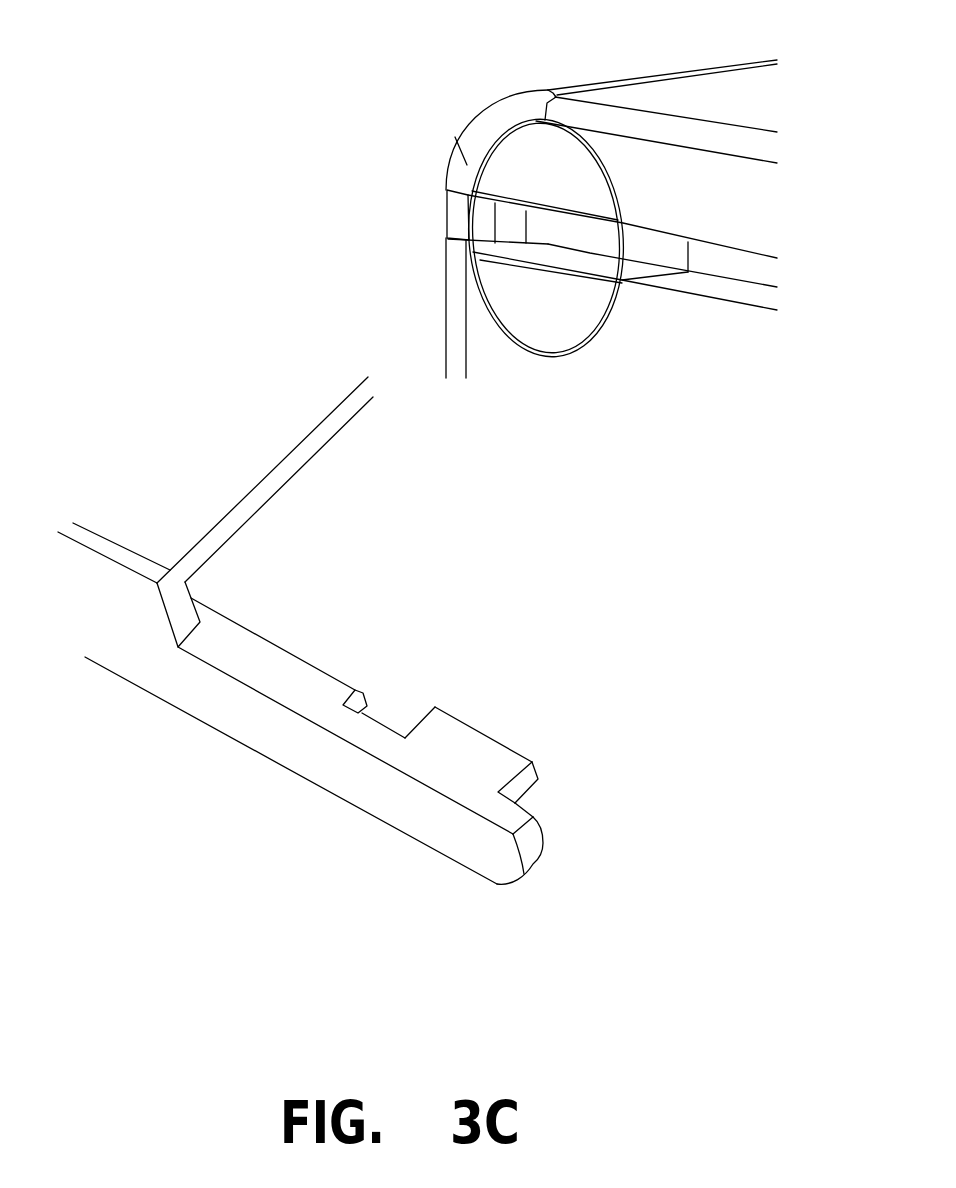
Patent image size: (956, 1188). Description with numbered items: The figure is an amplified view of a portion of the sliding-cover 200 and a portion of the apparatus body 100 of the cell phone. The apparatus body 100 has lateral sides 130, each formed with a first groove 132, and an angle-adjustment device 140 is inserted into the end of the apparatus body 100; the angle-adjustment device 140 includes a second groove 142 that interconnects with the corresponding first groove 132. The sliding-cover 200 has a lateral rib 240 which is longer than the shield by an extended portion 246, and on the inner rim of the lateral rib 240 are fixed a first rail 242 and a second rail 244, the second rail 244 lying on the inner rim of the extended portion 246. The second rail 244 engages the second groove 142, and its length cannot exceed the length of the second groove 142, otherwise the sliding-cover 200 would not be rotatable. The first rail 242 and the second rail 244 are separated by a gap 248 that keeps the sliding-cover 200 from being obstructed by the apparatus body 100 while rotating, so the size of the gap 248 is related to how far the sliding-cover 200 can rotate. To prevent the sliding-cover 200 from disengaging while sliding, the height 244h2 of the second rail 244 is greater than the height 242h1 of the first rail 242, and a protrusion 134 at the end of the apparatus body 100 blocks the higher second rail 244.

The apparatus body 100 is at (723, 122).
The lateral side 130 is at (732, 203).
The first groove 132 is at (760, 267).
The protrusion 134 is at (448, 220).
The angle-adjustment device 140 is at (528, 142).
The second groove 142 is at (650, 245).
The sliding-cover 200 is at (140, 690).
The lateral rib 240 is at (108, 644).
The first rail 242 is at (235, 628).
The height of the first rail 242h1 is at (350, 687).
The second rail 244 is at (470, 747).
The height of the second rail 244h2 is at (517, 782).
The extended portion 246 is at (508, 862).
The gap 248 is at (407, 710).